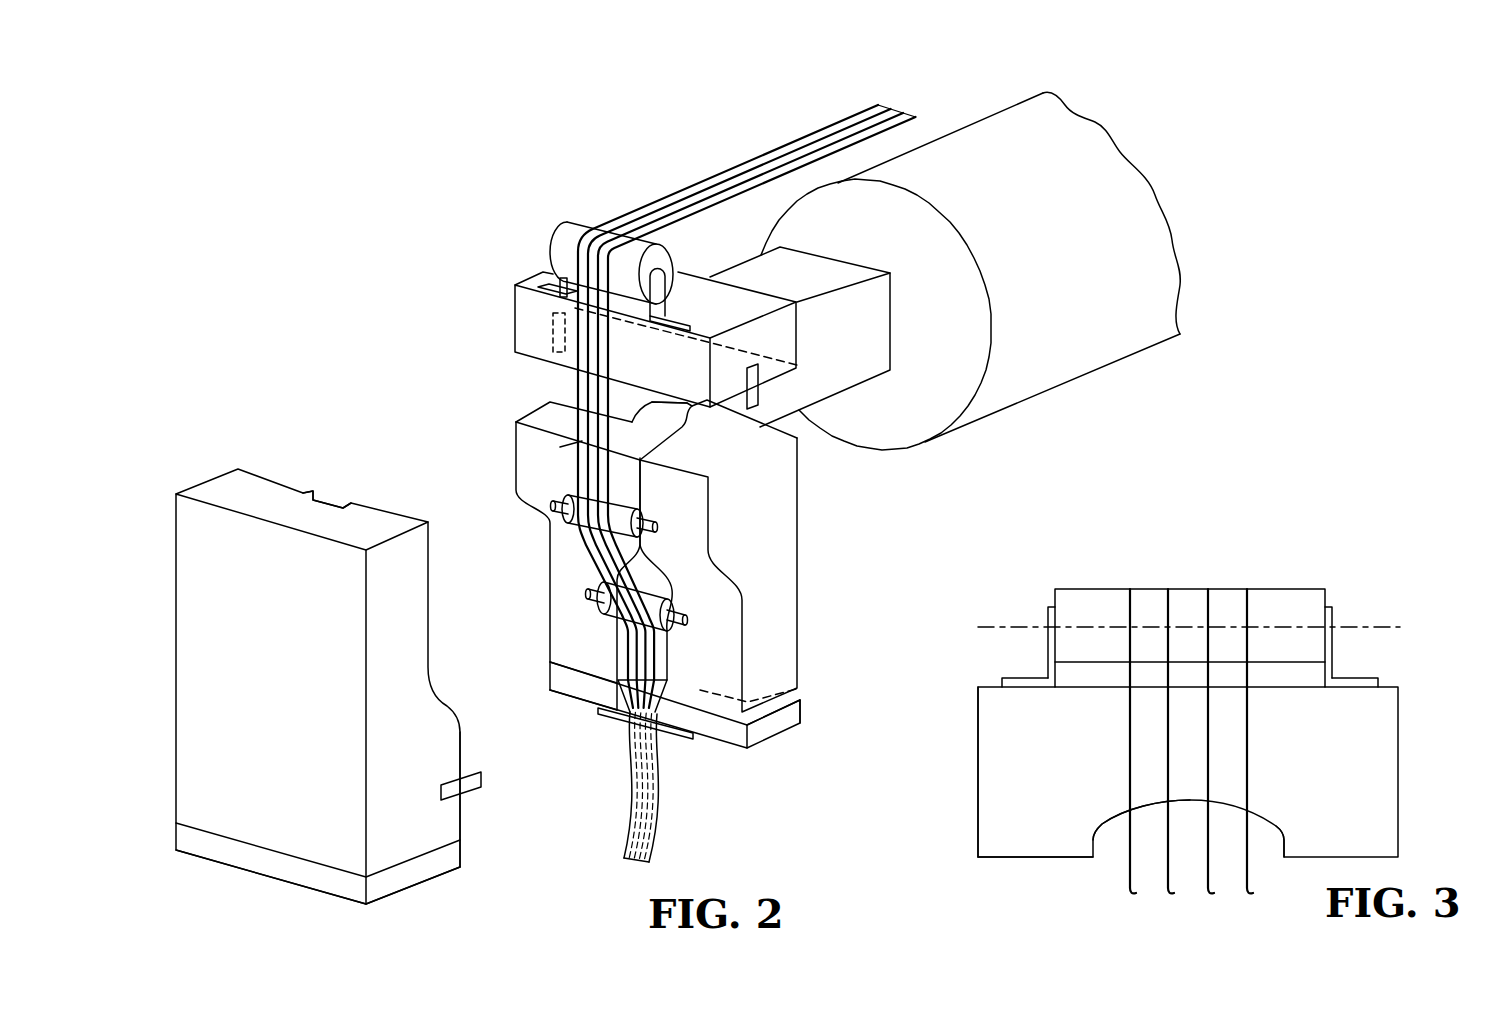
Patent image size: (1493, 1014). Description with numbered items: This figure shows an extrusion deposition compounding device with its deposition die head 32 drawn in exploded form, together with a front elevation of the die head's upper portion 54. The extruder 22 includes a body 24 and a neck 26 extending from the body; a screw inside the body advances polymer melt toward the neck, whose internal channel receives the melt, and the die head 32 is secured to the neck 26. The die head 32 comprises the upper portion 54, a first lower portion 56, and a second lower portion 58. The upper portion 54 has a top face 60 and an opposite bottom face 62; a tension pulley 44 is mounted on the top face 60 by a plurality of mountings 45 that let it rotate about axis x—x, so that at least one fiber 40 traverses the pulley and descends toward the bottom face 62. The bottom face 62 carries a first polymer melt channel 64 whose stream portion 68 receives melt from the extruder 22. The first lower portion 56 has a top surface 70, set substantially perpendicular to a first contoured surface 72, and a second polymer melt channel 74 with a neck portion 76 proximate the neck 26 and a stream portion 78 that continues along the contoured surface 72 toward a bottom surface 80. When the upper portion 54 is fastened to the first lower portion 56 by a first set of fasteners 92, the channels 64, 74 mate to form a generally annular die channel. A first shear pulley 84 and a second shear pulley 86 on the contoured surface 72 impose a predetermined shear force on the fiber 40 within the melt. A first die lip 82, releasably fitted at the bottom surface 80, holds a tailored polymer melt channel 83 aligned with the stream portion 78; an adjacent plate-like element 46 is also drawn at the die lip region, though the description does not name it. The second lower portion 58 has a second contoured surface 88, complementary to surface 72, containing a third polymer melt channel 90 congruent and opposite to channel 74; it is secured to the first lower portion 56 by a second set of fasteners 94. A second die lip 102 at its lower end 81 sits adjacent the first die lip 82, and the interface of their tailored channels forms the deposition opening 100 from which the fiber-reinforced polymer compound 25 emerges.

In FIG. 2, the extruder 22 is at (1140, 303).
In FIG. 2, the body 24 is at (1123, 165).
In FIG. 2, the fiber-reinforced polymer compound 25 is at (622, 848).
In FIG. 2, the neck 26 is at (873, 355).
In FIG. 2, the deposition die head 32 is at (298, 282).
In FIG. 2, the fiber 40 is at (692, 184).
In FIG. 3, the fiber 40 is at (1246, 844).
In FIG. 2, the tension pulley 44 is at (578, 232).
In FIG. 3, the tension pulley 44 is at (1278, 587).
In FIG. 3, the mountings 45 is at (1046, 607).
In FIG. 2, the guide plate 46 is at (612, 716).
In FIG. 2, the upper portion 54 is at (522, 272).
In FIG. 3, the upper portion 54 is at (968, 804).
In FIG. 2, the first lower portion 56 is at (766, 750).
In FIG. 2, the second lower portion 58 is at (186, 522).
In FIG. 3, the top face 60 is at (1390, 684).
In FIG. 3, the bottom face 62 is at (1003, 859).
In FIG. 2, the first polymer melt channel 64 is at (580, 380).
In FIG. 3, the first polymer melt channel 64 is at (1115, 817).
In FIG. 3, the stream portion 68 is at (1278, 842).
In FIG. 2, the top surface 70 is at (563, 425).
In FIG. 2, the first contoured surface 72 is at (533, 491).
In FIG. 2, the second polymer melt channel 74 is at (638, 514).
In FIG. 2, the neck portion 76 is at (692, 422).
In FIG. 2, the stream portion 78 is at (582, 450).
In FIG. 2, the bottom surface 80 is at (792, 688).
In FIG. 2, the lower end 81 is at (255, 880).
In FIG. 2, the first die lip 82 is at (786, 727).
In FIG. 2, the tailored polymer melt channel 83 is at (622, 690).
In FIG. 2, the first shear pulley 84 is at (572, 518).
In FIG. 2, the second shear pulley 86 is at (608, 606).
In FIG. 2, the second contoured surface 88 is at (468, 830).
In FIG. 2, the third polymer melt channel 90 is at (325, 490).
In FIG. 2, the first set of fasteners 92 is at (552, 326).
In FIG. 2, the second set of fasteners 94 is at (470, 786).
In FIG. 2, the deposition opening 100 is at (660, 738).
In FIG. 2, the second die lip 102 is at (215, 847).